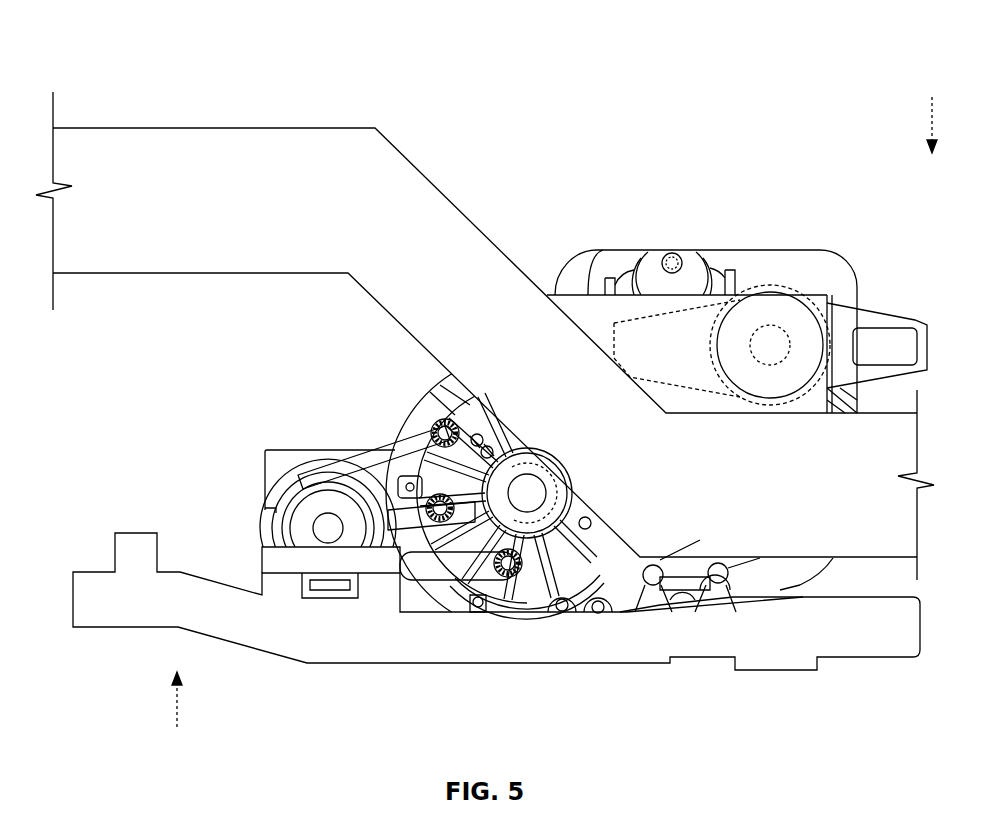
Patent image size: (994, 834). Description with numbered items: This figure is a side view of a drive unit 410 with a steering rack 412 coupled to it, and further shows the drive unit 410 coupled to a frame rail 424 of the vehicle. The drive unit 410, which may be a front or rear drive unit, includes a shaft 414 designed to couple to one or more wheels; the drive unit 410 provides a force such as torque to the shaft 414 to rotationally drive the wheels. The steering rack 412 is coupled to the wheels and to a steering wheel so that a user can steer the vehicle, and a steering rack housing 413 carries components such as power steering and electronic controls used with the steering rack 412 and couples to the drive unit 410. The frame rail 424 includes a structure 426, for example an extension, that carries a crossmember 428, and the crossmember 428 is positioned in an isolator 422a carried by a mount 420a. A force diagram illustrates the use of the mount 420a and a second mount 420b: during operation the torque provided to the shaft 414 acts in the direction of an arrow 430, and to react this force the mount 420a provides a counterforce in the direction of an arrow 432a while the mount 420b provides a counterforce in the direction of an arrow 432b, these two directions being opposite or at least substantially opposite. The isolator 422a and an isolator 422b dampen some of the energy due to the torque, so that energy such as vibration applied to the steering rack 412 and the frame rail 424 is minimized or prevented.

The drive unit 410 is at (567, 268).
The steering rack 412 is at (320, 545).
The steering rack housing 413 is at (323, 450).
The shaft 414 is at (503, 593).
The mount 420a is at (752, 288).
The mount 420b is at (265, 467).
The isolator 422a is at (795, 290).
The isolator 422b is at (273, 508).
The frame rail 424 is at (228, 206).
The structure 426 is at (592, 262).
The crossmember 428 is at (790, 340).
The arrow 430 is at (550, 607).
The arrow 432a is at (930, 110).
The arrow 432b is at (175, 690).